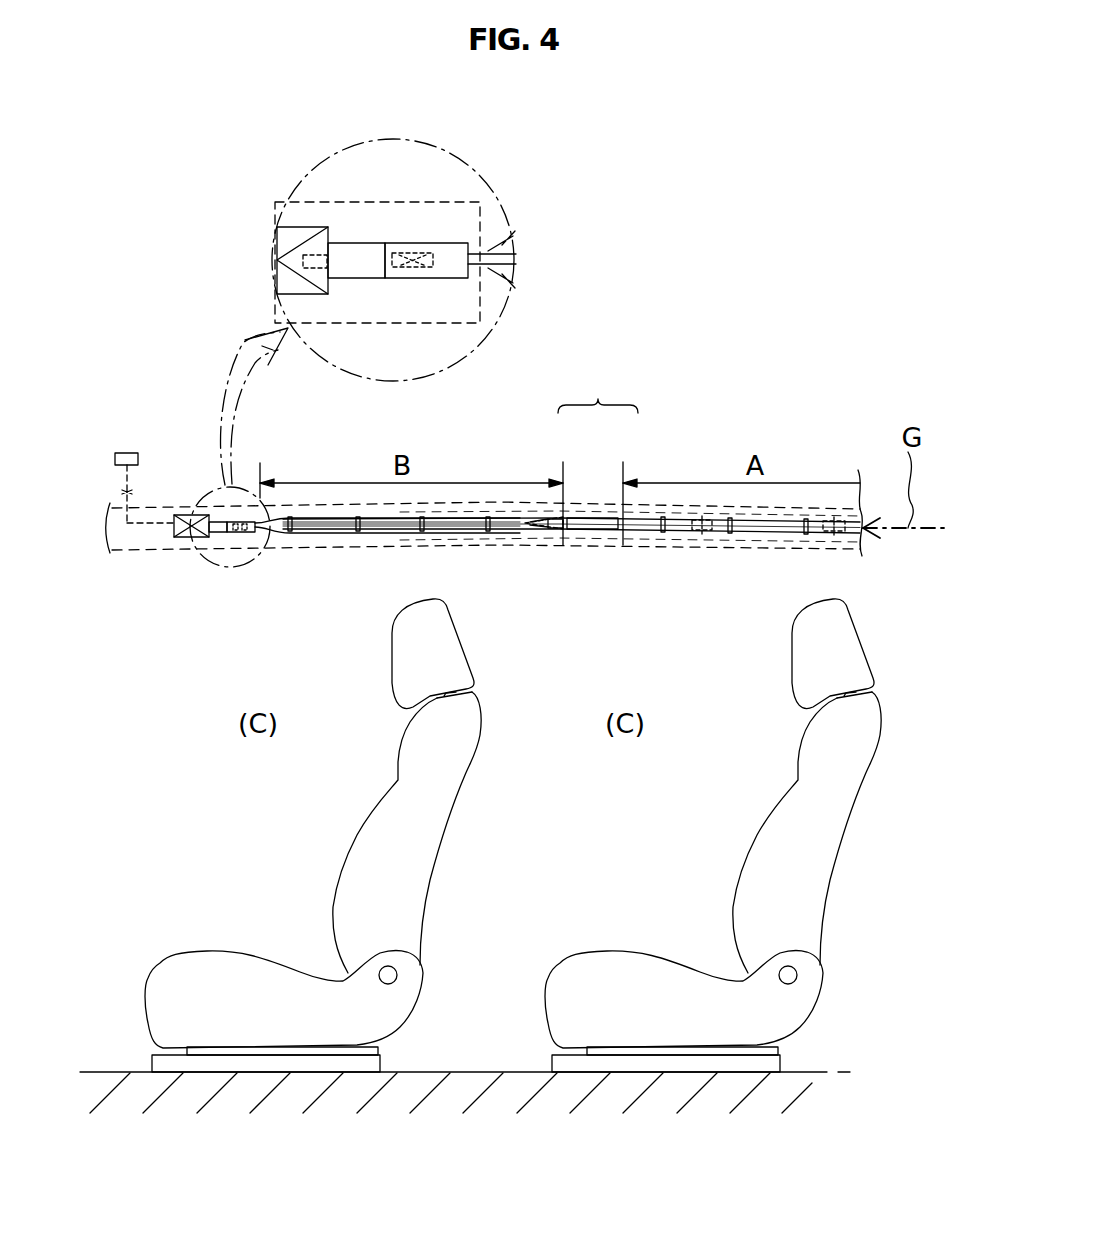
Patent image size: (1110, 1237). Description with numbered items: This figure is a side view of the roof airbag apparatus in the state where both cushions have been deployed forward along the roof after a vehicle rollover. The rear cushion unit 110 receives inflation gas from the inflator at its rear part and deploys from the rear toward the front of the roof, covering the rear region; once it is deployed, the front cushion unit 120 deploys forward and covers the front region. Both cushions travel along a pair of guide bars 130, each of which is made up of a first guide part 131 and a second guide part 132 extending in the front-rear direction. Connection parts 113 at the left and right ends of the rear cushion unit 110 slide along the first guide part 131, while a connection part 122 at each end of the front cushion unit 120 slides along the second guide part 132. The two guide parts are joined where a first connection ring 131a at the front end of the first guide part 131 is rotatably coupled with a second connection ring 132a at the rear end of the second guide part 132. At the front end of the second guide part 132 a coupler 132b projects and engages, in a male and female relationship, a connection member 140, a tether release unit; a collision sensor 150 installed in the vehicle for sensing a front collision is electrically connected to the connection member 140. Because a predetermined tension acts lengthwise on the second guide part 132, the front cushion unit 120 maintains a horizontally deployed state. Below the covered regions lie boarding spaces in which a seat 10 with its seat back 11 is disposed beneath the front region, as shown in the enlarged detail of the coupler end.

The seat 10 is at (192, 980).
The seat back 11 is at (372, 862).
The rear cushion unit 110 is at (747, 533).
The connection parts 113 is at (807, 531).
The front cushion unit 120 is at (467, 531).
The connection part 122 is at (357, 520).
The guide bars 130 is at (598, 395).
The first guide part 131 is at (653, 525).
The first connection ring 131a is at (567, 530).
The second guide part 132 is at (488, 255).
The second connection ring 132a is at (537, 530).
The coupler 132b is at (357, 257).
The connection member 140 is at (293, 237).
The collision sensor 150 is at (127, 453).